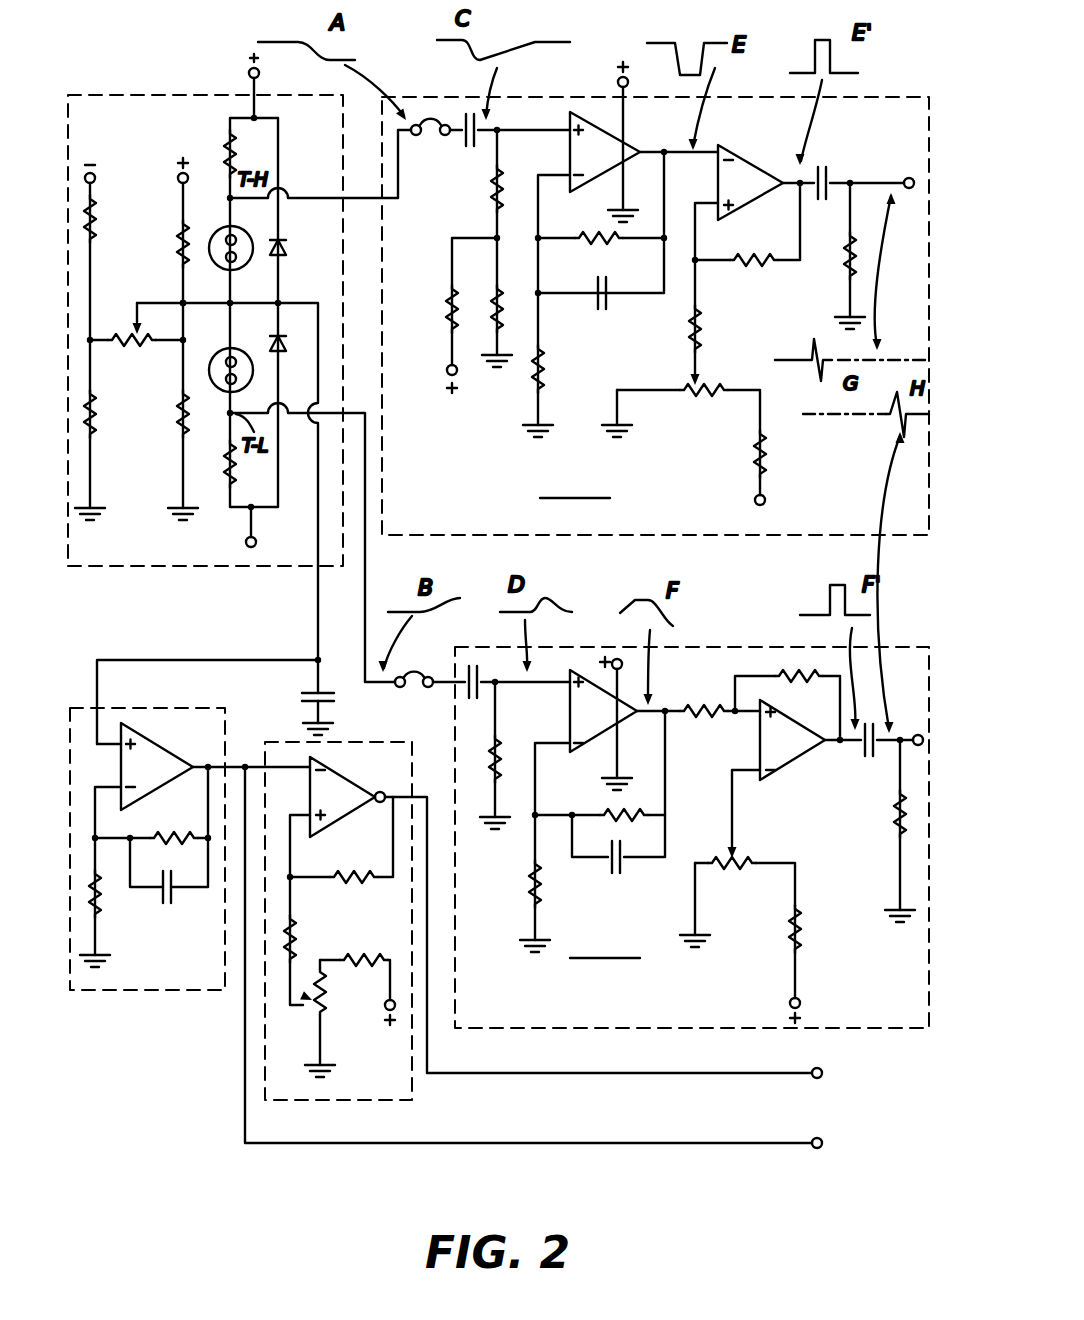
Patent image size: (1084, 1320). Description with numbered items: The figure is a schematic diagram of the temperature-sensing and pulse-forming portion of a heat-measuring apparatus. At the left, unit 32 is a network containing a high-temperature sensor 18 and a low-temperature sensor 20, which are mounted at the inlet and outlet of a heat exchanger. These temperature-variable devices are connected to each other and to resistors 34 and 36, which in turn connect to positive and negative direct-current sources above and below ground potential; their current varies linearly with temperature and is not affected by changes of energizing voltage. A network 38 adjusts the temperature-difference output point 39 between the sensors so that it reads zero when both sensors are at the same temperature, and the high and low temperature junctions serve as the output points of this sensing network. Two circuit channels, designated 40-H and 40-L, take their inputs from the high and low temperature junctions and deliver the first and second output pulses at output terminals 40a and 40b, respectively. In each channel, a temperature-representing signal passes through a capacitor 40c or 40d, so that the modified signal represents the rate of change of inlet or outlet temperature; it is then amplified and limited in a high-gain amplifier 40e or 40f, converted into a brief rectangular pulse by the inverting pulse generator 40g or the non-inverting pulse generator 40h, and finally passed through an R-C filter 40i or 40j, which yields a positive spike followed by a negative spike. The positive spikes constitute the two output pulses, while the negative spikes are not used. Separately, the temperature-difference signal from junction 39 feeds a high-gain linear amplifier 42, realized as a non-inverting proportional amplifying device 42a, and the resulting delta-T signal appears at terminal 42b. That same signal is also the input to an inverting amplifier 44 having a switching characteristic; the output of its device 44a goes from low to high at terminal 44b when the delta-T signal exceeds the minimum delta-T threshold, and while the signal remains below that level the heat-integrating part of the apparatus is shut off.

The unit 32 is at (180, 95).
The resistor 34 is at (228, 162).
The resistor 36 is at (232, 478).
The network 38 is at (148, 270).
The temperature-difference output point 39 is at (229, 308).
The high-temperature sensor 18 is at (243, 212).
The low-temperature sensor 20 is at (230, 413).
The circuit channel 40-H is at (575, 483).
The circuit channel 40-L is at (605, 943).
The capacitor 40c is at (468, 152).
The high-gain amplifier 40e is at (566, 154).
The inverting pulse generator 40g is at (758, 143).
The R-C filter 40i is at (813, 200).
The output terminal 40a is at (906, 178).
The capacitor 40d is at (472, 666).
The high-gain amplifier 40f is at (602, 746).
The non-inverting pulse generator 40h is at (782, 768).
The R-C filter 40j is at (862, 760).
The output terminal 40b is at (922, 735).
The high-gain linear amplifier 42 is at (204, 708).
The non-inverting proportional amplifying device 42a is at (162, 724).
The terminal 42b is at (812, 1138).
The inverting amplifier 44 is at (400, 742).
The device 44a is at (351, 818).
The terminal 44b is at (812, 1068).